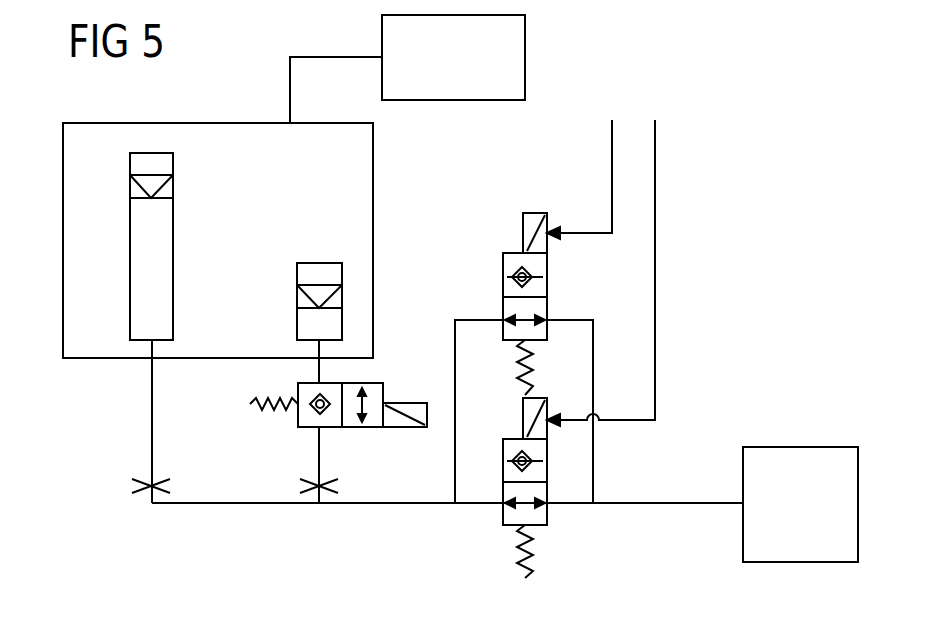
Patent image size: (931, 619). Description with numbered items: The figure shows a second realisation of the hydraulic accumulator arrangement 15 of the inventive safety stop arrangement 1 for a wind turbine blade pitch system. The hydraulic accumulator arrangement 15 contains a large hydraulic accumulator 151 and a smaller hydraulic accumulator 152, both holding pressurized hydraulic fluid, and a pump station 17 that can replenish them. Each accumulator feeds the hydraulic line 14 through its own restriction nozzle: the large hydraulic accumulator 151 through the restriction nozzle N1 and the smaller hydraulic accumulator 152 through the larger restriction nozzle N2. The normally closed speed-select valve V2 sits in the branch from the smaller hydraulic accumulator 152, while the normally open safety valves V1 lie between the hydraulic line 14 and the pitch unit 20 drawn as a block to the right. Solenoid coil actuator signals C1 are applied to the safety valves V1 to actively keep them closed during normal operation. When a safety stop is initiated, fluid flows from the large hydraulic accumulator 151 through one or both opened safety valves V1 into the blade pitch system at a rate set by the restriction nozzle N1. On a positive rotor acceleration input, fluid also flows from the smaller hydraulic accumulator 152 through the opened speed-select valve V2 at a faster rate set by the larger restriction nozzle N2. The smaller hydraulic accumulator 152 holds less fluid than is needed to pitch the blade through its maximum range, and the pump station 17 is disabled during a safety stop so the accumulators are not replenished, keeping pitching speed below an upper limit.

The safety stop arrangement 1 is at (790, 160).
The hydraulic line 14 is at (218, 505).
The hydraulic accumulator arrangement 15 is at (373, 183).
The pump station 17 is at (525, 45).
The pitch unit 20 is at (798, 447).
The large hydraulic accumulator 151 is at (173, 163).
The smaller hydraulic accumulator 152 is at (319, 263).
The solenoid coil actuator signal C1 is at (612, 153).
The restriction nozzle N1 is at (140, 493).
The larger restriction nozzle N2 is at (310, 493).
The safety valve V1 is at (503, 268).
The speed-select valve V2 is at (373, 427).